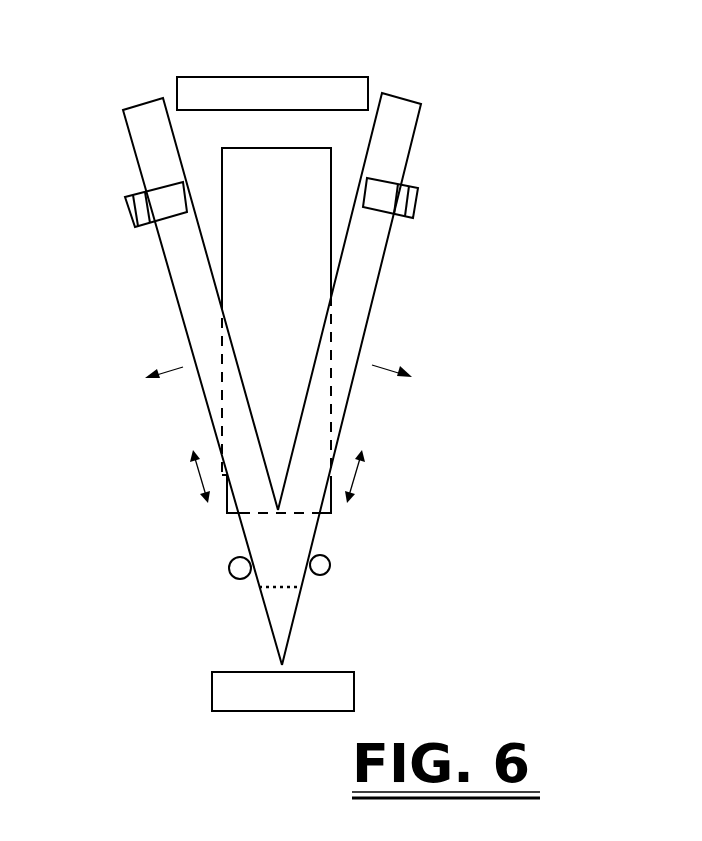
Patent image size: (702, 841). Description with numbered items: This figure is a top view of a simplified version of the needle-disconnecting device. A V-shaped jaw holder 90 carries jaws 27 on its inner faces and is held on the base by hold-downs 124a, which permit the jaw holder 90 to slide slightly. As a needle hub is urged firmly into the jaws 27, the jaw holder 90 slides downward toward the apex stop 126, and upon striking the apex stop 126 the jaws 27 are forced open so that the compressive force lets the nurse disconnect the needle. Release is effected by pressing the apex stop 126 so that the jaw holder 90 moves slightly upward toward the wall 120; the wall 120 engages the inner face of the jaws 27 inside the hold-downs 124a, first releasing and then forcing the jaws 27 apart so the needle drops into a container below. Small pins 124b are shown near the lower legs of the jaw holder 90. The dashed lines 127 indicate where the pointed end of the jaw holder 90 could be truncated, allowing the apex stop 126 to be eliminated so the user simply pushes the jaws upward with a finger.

The wall 120 is at (268, 90).
The jaws 27 is at (357, 288).
The jaw holder 90 is at (198, 412).
The hold-downs 124a is at (160, 202).
The pivot pin 124b is at (229, 568).
The dashed lines 127 is at (252, 595).
The apex stop 126 is at (223, 690).